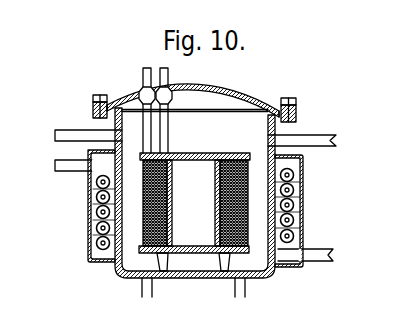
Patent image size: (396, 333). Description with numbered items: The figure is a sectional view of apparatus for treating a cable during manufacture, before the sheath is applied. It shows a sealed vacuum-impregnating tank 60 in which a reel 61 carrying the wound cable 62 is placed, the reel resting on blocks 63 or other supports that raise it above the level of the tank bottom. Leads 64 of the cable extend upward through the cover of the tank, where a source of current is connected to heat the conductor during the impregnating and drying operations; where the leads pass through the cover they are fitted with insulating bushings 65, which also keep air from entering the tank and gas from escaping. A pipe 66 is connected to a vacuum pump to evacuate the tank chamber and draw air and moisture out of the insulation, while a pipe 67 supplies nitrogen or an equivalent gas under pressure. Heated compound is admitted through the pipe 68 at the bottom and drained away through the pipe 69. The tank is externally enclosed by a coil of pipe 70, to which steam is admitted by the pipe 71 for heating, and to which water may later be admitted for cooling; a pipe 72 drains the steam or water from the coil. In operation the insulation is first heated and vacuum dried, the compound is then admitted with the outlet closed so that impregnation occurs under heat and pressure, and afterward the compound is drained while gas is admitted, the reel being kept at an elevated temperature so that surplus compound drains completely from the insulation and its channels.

The sealed vacuum-impregnating tank 60 is at (286, 120).
The reel 61 is at (233, 153).
The cable 62 is at (143, 219).
The blocks 63 is at (223, 272).
The leads 64 is at (148, 126).
The insulating bushings 65 is at (164, 92).
The pipe 66 is at (68, 130).
The pipe 67 is at (331, 137).
The pipe 68 is at (142, 290).
The pipe 69 is at (245, 290).
The coil of pipe 70 is at (90, 246).
The pipe 71 is at (58, 164).
The pipe 72 is at (330, 253).